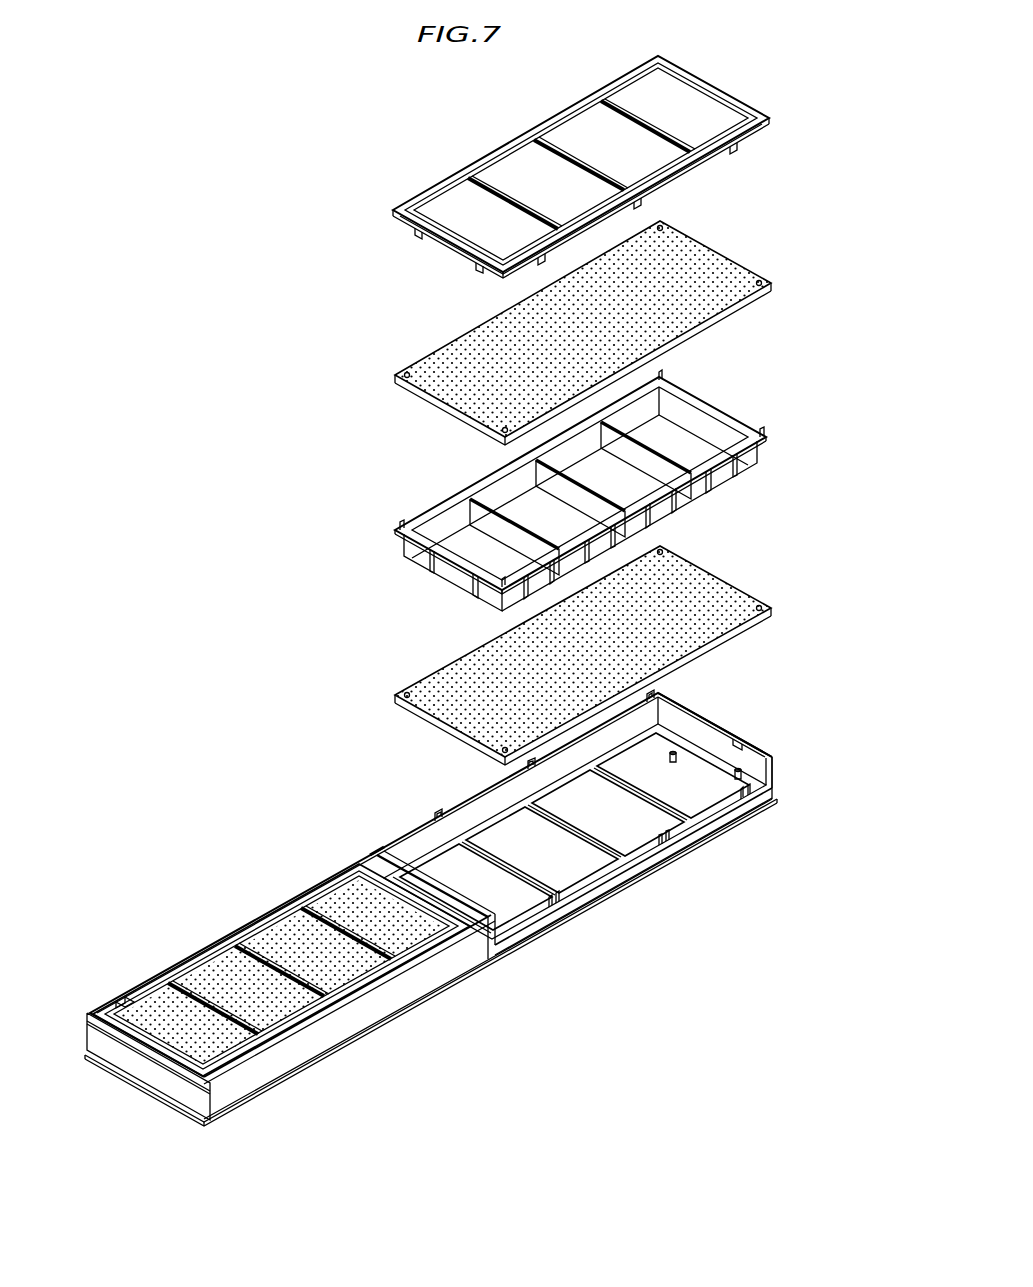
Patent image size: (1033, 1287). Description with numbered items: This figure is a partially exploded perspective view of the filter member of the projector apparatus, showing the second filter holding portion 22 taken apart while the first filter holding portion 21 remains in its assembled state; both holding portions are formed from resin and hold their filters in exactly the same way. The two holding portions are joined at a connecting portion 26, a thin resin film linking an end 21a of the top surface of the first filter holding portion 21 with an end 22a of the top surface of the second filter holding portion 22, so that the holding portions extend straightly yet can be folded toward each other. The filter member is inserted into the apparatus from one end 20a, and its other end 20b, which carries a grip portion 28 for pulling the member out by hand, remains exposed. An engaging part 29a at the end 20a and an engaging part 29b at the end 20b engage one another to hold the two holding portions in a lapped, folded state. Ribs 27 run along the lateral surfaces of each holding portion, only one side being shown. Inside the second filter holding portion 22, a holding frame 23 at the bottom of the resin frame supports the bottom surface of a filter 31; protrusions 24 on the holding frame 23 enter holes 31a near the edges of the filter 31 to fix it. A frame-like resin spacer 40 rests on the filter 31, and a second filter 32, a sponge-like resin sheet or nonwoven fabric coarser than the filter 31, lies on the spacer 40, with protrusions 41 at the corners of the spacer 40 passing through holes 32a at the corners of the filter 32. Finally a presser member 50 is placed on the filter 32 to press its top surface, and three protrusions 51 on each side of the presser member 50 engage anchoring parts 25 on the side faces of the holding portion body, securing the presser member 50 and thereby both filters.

The end of the filter member 20a is at (776, 763).
The other end of the filter member 20b is at (205, 1112).
The first filter holding portion 21 is at (318, 1040).
The end of the top surface of the first filter holding portion 21a is at (376, 857).
The second filter holding portion 22 is at (618, 868).
The end of the top surface of the second filter holding portion 22a is at (400, 850).
The holding frame 23 is at (557, 840).
The protrusions 24 is at (733, 770).
The anchoring parts 25 is at (640, 700).
The connecting portion 26 is at (390, 852).
The ribs 27 is at (713, 835).
The grip portion 28 is at (140, 1070).
The engaging part 29a is at (745, 730).
The engaging part 29b is at (125, 1005).
The filter 31 is at (722, 645).
The holes 31a is at (682, 556).
The filter 32 is at (708, 325).
The holes 32a is at (662, 226).
The spacer 40 is at (735, 425).
The protrusions 41 is at (672, 378).
The presser member 50 is at (712, 95).
The protrusions 51 is at (733, 150).